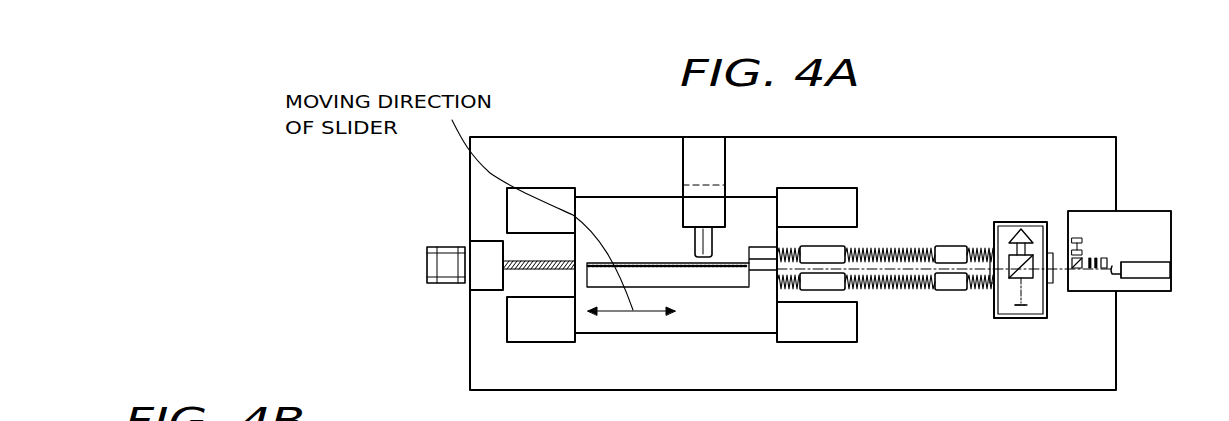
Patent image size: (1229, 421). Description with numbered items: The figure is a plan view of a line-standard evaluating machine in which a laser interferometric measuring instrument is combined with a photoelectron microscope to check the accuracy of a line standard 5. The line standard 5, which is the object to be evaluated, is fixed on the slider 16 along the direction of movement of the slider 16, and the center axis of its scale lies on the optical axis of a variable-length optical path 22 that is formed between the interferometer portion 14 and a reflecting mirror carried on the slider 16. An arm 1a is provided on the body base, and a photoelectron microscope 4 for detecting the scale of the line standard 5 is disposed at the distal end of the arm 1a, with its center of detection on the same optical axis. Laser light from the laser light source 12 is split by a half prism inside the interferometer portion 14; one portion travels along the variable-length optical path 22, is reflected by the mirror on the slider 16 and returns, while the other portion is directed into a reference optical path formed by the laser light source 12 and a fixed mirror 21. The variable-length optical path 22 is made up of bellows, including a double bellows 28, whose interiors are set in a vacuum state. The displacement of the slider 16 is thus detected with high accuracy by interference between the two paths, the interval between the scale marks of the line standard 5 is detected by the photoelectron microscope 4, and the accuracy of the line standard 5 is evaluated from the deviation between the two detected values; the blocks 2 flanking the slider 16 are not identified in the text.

The arm 1a is at (705, 172).
The guide blocks 2 is at (540, 310).
The photoelectron microscope 4 is at (693, 237).
The line standard 5 is at (640, 265).
The laser light source 12 is at (1145, 277).
The interferometer portion 14 is at (1020, 222).
The slider 16 is at (613, 325).
The fixed mirror 21 is at (1025, 315).
The variable-length optical path 22 is at (883, 262).
The double bellows 28 is at (786, 258).